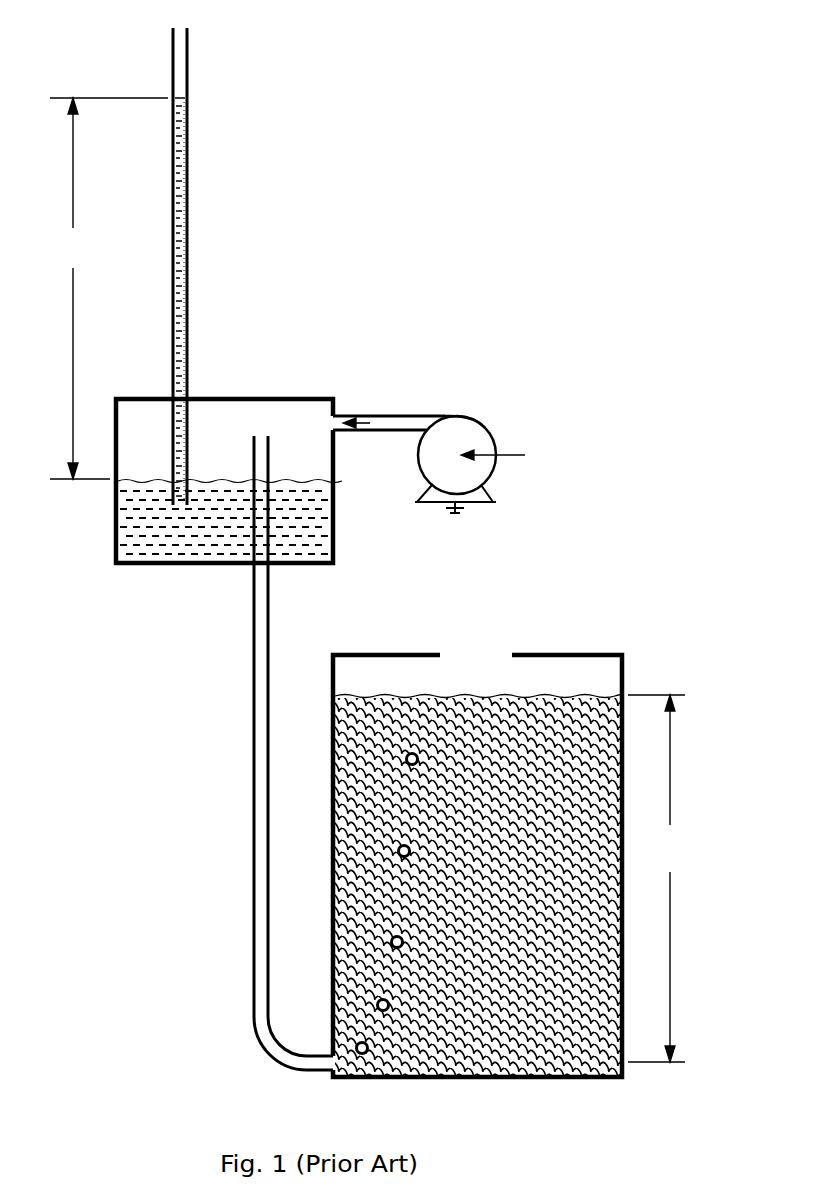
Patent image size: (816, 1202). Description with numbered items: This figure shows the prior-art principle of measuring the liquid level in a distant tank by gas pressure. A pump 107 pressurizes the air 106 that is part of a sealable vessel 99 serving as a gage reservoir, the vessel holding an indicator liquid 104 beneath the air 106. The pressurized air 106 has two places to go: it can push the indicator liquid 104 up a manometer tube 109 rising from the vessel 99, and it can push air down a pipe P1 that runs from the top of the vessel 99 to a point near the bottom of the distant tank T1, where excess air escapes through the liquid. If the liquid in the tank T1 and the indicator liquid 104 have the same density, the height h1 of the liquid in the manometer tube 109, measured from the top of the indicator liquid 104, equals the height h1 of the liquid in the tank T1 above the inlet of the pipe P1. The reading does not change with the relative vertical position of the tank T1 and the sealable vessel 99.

The manometer tube 109 is at (172, 53).
The sealable vessel 99 is at (233, 398).
The indicator liquid 104 is at (130, 539).
The air 106 is at (282, 420).
The pump 107 is at (485, 425).
The pipe P1 is at (254, 760).
The tank T1 is at (592, 652).
The height h1 is at (367, 580).